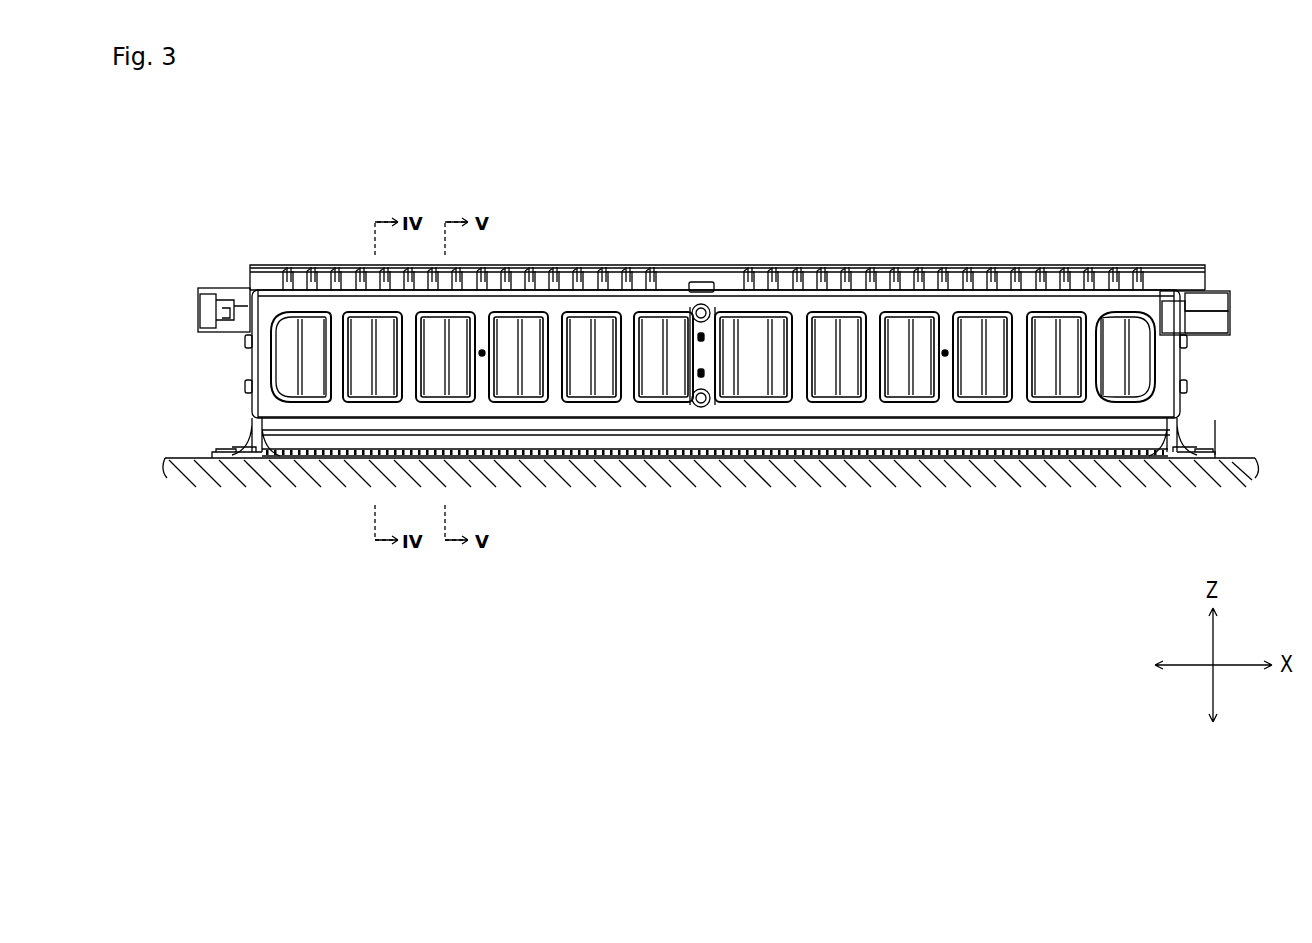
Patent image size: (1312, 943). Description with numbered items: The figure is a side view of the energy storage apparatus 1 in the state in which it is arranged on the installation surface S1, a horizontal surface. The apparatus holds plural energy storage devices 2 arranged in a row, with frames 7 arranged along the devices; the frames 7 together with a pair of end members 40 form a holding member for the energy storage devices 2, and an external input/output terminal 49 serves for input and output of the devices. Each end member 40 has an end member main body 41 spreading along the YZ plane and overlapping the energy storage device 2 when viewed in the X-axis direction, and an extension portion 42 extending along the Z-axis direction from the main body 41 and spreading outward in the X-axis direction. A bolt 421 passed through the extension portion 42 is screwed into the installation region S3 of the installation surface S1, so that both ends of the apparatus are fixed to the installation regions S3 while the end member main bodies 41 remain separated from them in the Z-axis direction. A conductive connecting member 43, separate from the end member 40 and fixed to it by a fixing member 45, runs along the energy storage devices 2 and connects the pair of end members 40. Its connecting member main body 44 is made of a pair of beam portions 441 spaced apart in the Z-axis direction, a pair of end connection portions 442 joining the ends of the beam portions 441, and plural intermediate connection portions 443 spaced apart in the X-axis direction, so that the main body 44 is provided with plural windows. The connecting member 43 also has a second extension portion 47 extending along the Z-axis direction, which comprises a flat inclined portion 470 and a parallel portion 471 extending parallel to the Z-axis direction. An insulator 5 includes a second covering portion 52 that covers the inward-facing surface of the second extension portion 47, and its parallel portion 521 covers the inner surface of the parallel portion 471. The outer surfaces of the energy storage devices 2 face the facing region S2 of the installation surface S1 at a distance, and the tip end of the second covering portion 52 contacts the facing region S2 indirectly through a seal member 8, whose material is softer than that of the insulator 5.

The energy storage apparatus 1 is at (914, 182).
The energy storage device 2 is at (603, 378).
The insulator 5 is at (1010, 455).
The frame 7 is at (716, 513).
The seal member 8 is at (330, 462).
The end member 40 is at (713, 500).
The end member main body 41 is at (268, 460).
The extension portion 42 is at (232, 458).
The connecting member 43 is at (1067, 432).
The connecting member main body 44 is at (1177, 173).
The fixing member 45 is at (243, 393).
The second extension portion 47 is at (715, 511).
The external input/output terminal 49 is at (1213, 290).
The second covering portion 52 is at (715, 512).
The bolt 421 is at (232, 445).
The beam portion 441 is at (1117, 383).
The end connection portion 442 is at (1167, 360).
The intermediate connection portion 443 is at (1088, 363).
The inclined portion 470 is at (845, 420).
The parallel portion 471 is at (775, 435).
The parallel portion 521 is at (658, 458).
The installation surface S1 is at (1230, 490).
The facing region S2 is at (930, 445).
The installation region S3 is at (1228, 485).